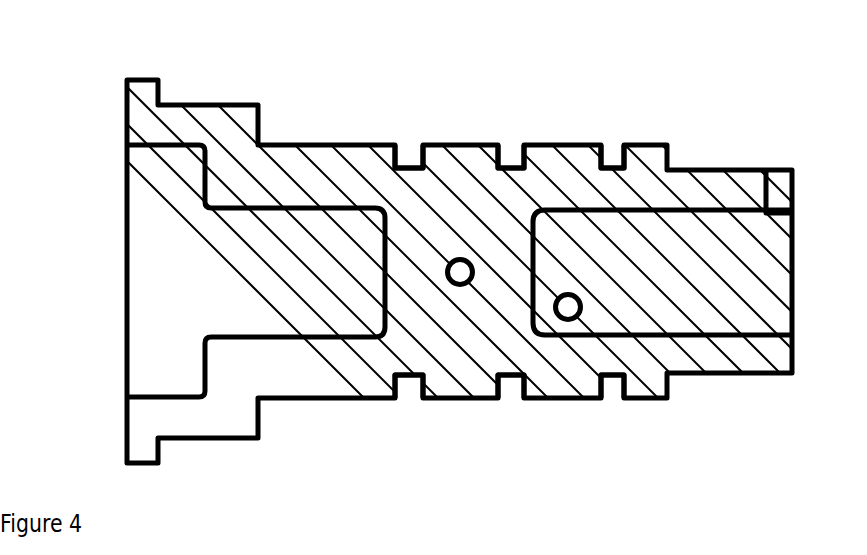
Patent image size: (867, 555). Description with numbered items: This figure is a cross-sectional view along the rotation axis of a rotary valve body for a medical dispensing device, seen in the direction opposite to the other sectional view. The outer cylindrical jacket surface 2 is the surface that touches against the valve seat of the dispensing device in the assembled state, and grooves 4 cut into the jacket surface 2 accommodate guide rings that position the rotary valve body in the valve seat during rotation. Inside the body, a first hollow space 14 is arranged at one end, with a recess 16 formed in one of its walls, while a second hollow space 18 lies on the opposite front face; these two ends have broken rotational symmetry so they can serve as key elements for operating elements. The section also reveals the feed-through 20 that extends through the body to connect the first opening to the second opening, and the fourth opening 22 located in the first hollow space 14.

The cylindrical jacket surface 2 is at (330, 141).
The grooves 4 is at (396, 147).
The hollow space 14 is at (702, 240).
The recess 16 is at (766, 168).
The second hollow space 18 is at (275, 252).
The feed-through 20 is at (445, 257).
The fourth opening 22 is at (553, 286).